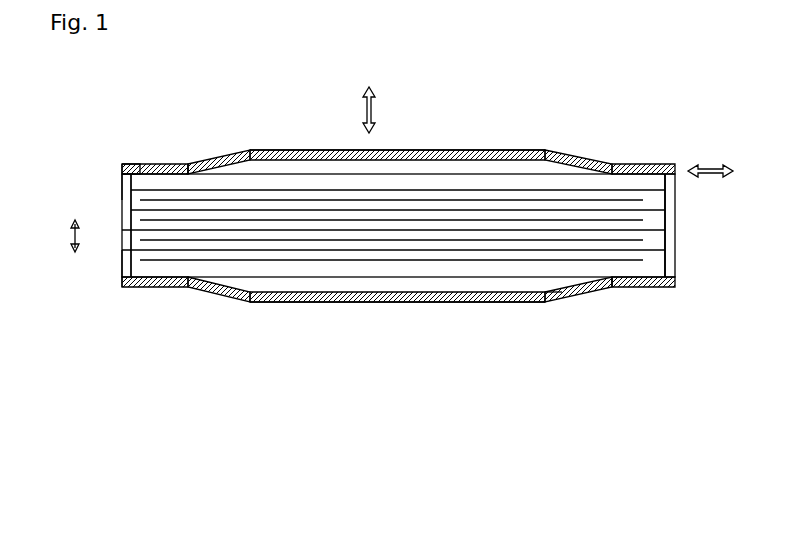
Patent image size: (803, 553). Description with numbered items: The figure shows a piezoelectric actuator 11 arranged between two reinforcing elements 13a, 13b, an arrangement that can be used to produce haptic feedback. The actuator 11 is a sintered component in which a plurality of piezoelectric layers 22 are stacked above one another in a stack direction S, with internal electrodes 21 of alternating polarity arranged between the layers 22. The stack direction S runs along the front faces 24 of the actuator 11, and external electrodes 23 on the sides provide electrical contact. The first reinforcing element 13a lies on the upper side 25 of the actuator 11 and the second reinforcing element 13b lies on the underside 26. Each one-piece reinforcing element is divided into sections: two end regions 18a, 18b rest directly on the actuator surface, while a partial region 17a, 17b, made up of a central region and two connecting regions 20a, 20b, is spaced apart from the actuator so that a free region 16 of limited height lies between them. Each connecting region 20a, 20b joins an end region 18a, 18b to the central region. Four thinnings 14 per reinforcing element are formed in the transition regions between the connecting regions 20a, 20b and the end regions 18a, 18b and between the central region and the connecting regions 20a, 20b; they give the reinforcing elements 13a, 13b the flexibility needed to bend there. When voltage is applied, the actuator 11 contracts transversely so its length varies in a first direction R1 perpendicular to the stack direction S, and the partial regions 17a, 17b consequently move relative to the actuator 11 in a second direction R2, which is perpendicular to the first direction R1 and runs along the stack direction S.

The piezoelectric actuator 11 is at (442, 182).
The first reinforcing element 13a is at (410, 150).
The second reinforcing element 13b is at (360, 317).
The thinning 14 is at (248, 150).
The free region 16 is at (562, 292).
The first partial region 17a is at (503, 149).
The second partial region 17b is at (498, 303).
The end region of first reinforcing element 18a is at (177, 200).
The end region of second reinforcing element 18b is at (140, 288).
The first connecting region 20a is at (192, 164).
The second connecting region 20b is at (593, 290).
The internal electrode 21 is at (134, 172).
The piezoelectric layer 22 is at (665, 202).
The external electrode 23 is at (120, 192).
The front face 24 is at (127, 240).
The upper side 25 is at (125, 170).
The underside 26 is at (124, 287).
The stack direction S is at (68, 240).
The first direction R1 is at (712, 165).
The second direction R2 is at (363, 112).